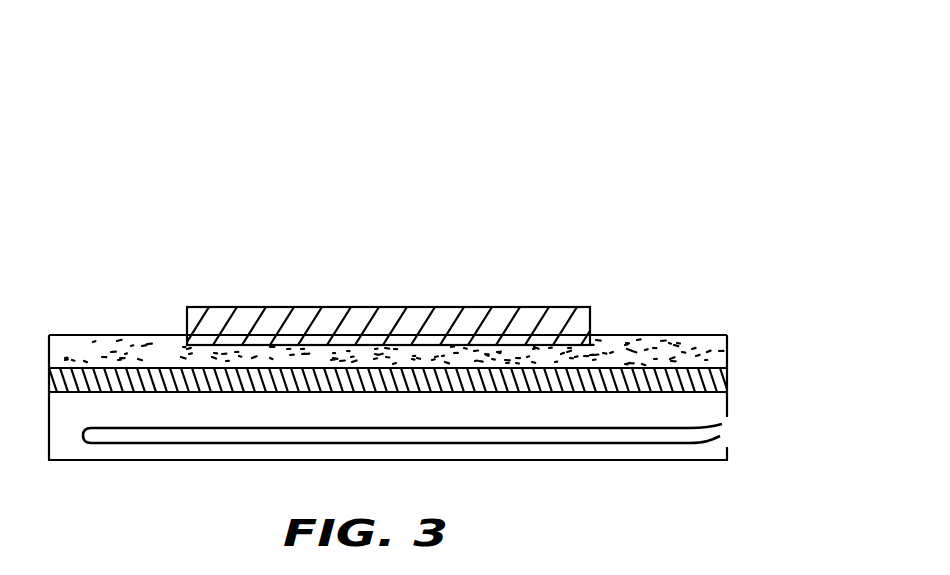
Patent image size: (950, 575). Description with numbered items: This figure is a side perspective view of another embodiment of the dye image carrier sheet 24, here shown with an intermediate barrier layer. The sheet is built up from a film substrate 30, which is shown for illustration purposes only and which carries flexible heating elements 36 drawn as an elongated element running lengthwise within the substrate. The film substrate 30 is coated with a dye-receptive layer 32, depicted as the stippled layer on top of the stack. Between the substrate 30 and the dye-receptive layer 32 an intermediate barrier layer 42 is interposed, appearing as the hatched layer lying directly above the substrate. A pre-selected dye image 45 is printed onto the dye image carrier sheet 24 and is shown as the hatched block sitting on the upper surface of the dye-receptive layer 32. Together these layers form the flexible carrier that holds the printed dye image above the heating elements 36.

The dye image carrier sheet 24 is at (640, 170).
The film substrate 30 is at (707, 407).
The dye-receptive layer 32 is at (727, 353).
The flexible heating elements 36 is at (722, 424).
The intermediate barrier layer 42 is at (50, 378).
The pre-selected dye image 45 is at (603, 302).